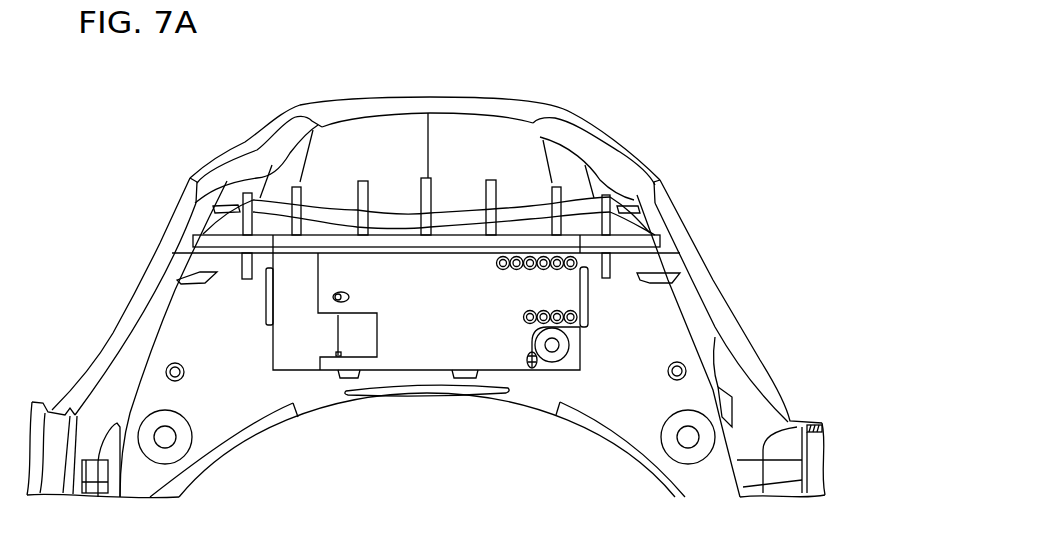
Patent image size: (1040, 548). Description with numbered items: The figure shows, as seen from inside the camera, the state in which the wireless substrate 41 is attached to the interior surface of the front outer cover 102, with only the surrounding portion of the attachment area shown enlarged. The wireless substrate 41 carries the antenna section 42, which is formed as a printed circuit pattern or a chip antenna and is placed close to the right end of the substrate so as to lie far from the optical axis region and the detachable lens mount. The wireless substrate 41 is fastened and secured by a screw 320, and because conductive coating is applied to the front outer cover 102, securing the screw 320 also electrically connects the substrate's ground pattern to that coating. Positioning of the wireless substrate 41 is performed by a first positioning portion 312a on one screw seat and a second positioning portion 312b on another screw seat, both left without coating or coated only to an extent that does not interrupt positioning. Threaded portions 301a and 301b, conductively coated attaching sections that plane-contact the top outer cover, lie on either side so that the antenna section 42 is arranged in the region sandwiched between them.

The front outer cover 102 is at (172, 208).
The wireless substrate 41 is at (433, 300).
The antenna section 42 is at (297, 313).
The screw 320 is at (556, 347).
The first positioning portion 312a is at (527, 356).
The second positioning portion 312b is at (343, 296).
The threaded portion 301a is at (688, 437).
The threaded portion 301b is at (167, 440).